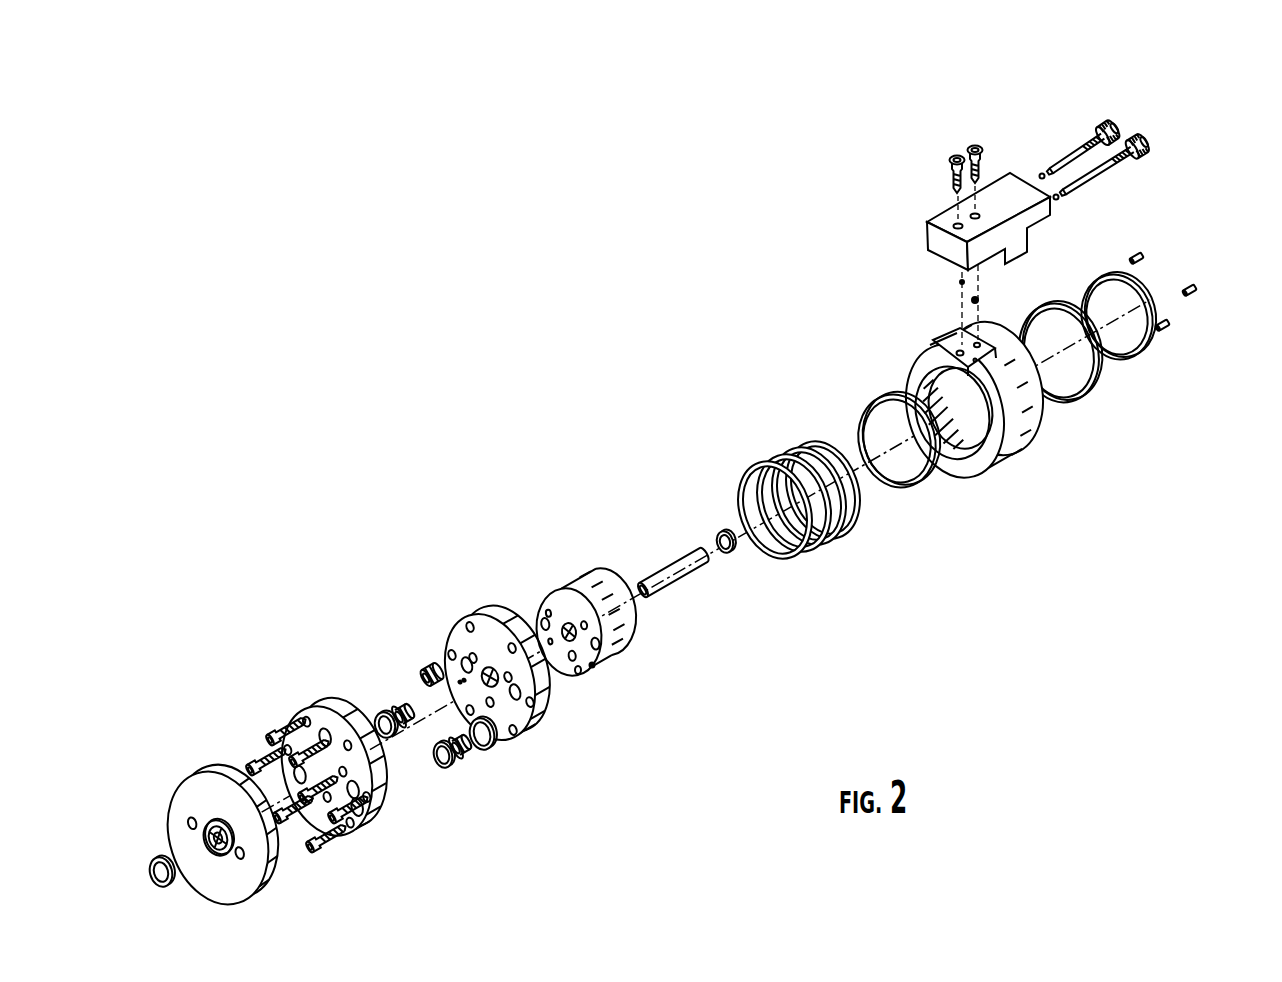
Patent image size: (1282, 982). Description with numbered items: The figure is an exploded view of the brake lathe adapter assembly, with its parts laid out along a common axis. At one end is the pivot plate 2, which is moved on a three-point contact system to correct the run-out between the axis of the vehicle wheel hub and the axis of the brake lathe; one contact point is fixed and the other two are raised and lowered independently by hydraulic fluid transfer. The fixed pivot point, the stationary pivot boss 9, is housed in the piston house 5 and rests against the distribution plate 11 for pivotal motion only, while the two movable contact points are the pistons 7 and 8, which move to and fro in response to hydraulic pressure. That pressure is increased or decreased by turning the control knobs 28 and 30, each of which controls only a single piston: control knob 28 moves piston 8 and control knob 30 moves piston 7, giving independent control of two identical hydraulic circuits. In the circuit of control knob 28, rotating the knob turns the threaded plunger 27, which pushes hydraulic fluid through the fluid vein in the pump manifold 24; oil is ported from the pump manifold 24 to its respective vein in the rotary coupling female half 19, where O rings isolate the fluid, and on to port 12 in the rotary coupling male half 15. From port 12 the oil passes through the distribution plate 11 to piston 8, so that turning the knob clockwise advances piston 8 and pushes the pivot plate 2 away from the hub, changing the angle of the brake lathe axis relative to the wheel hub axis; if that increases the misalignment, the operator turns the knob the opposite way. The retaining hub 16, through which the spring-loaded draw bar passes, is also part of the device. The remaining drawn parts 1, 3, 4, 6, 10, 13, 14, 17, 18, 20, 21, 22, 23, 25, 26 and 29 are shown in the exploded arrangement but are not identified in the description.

The O-ring 1 is at (720, 527).
The pivot plate 2 is at (190, 772).
The bolts 3 is at (262, 758).
The bolts 4 is at (290, 824).
The piston house 5 is at (312, 703).
The O-ring seal 6 is at (382, 710).
The piston 7 is at (406, 700).
The piston 8 is at (475, 753).
The stationary pivot boss 9 is at (436, 665).
The seal ring 10 is at (489, 748).
The distribution plate 11 is at (475, 612).
The port 12 is at (520, 708).
The port in piston 13 is at (580, 674).
The port in piston 14 is at (594, 667).
The rotary coupling male half 15 is at (553, 598).
The retaining hub 16 is at (678, 553).
The spring 17 is at (835, 542).
The sealing ring 18 is at (930, 482).
The rotary coupling female half 19 is at (903, 348).
The housing mounting pad 20 is at (972, 300).
The sealing ring 21 is at (1102, 388).
The sealing ring 22 is at (1150, 352).
The pins 23 is at (1197, 289).
The pump manifold 24 is at (938, 217).
The screws 25 is at (956, 155).
The balls 26 is at (1041, 172).
The threaded plunger 27 is at (1122, 175).
The control knob 28 is at (1160, 147).
The adjustment rod 29 is at (1092, 140).
The control knob 30 is at (1123, 118).